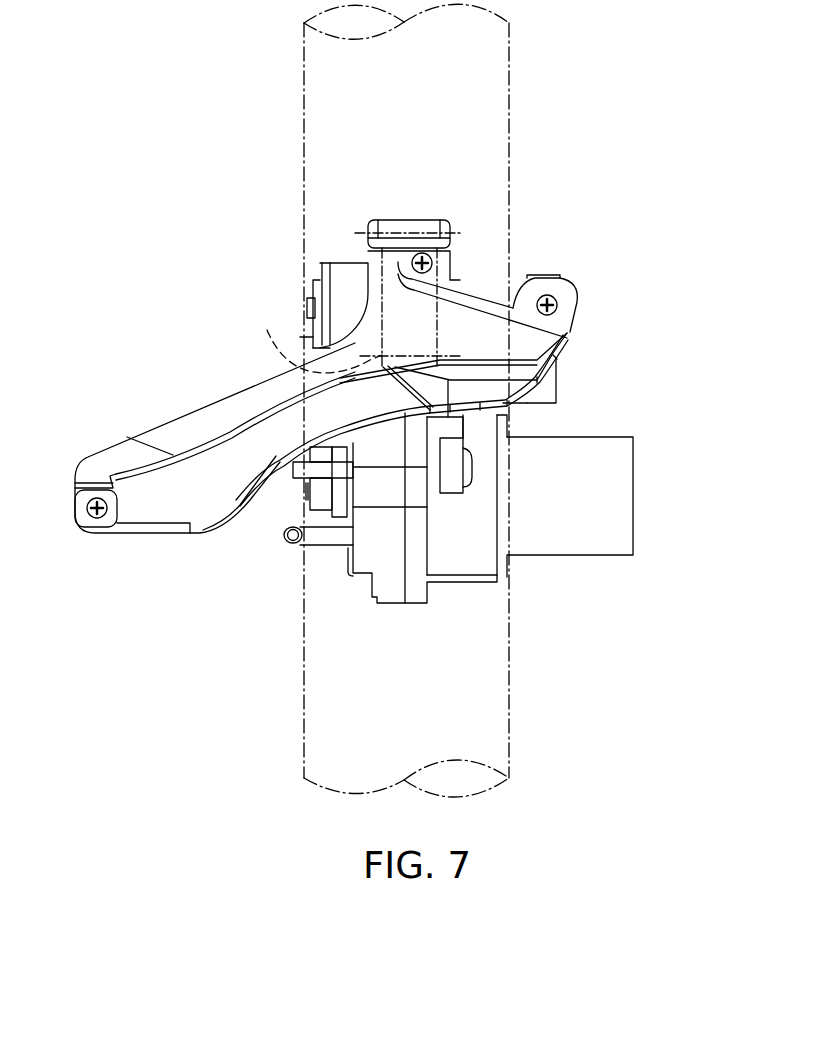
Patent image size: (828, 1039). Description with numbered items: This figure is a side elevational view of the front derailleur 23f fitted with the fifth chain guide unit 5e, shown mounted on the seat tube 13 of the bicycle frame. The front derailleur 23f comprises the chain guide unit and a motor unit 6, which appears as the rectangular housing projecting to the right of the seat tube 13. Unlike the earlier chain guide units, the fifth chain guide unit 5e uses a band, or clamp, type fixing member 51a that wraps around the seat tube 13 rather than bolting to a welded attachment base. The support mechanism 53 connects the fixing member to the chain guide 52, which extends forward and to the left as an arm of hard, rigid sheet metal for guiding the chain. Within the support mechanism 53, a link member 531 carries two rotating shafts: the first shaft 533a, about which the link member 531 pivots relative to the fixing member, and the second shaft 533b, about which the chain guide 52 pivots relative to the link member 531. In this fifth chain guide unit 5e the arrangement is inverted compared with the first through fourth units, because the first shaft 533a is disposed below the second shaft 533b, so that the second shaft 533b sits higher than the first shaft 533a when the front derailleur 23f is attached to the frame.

The front derailleur 23f is at (216, 144).
The seat tube 13 is at (486, 115).
The support mechanism 53 is at (342, 259).
The second shaft 533b is at (455, 232).
The first shaft 533a is at (330, 373).
The link member 531 is at (440, 262).
The fifth chain guide unit 5e is at (206, 371).
The chain guide 52 is at (162, 417).
The motor unit 6 is at (606, 431).
The band type fixing member 51a is at (282, 541).